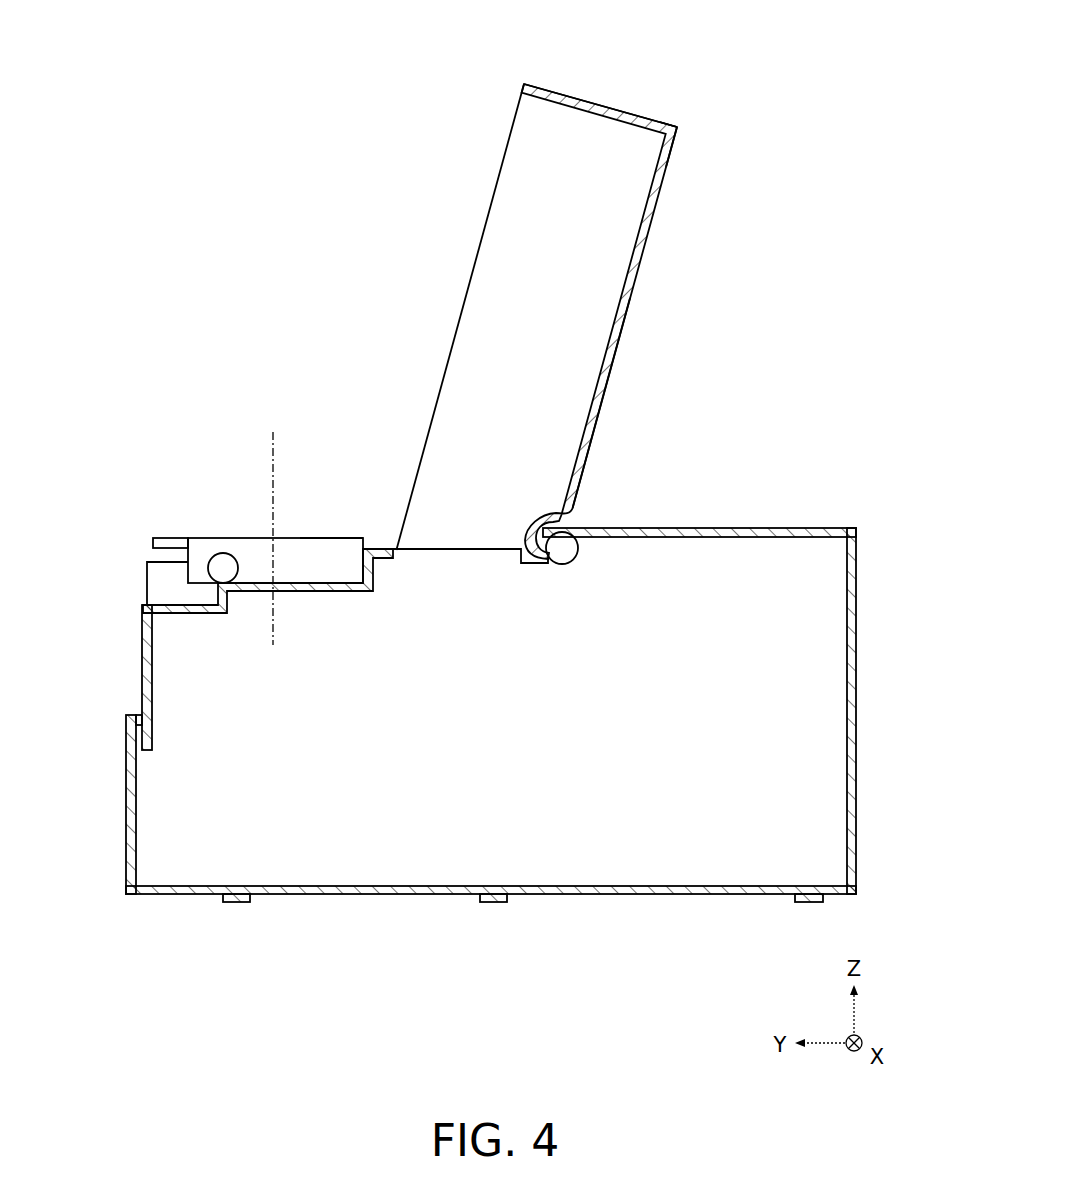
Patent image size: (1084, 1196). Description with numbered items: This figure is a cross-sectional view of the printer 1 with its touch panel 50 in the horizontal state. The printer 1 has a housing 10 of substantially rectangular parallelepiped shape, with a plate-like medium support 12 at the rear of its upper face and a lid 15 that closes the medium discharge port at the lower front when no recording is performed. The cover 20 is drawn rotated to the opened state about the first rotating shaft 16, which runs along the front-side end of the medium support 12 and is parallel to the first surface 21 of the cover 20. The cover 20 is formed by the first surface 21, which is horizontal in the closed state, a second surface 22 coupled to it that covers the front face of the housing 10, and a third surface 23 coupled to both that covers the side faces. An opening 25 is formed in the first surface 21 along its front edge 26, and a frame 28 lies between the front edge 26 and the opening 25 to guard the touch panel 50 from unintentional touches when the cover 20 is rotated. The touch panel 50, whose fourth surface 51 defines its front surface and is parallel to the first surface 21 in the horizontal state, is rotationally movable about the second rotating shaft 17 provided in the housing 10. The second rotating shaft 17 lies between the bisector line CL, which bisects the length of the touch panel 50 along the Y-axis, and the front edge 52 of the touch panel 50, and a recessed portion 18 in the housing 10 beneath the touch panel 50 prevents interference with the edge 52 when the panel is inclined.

The printer 1 is at (838, 86).
The housing 10 is at (866, 795).
The medium support 12 is at (740, 527).
The lid 15 is at (124, 812).
The first rotating shaft 16 is at (566, 563).
The second rotating shaft 17 is at (237, 586).
The recessed portion 18 is at (150, 600).
The cover 20 is at (472, 81).
The first surface 21 is at (598, 437).
The second surface 22 is at (602, 106).
The third surface 23 is at (480, 242).
The opening 25 is at (614, 350).
The front edge 26 is at (681, 121).
The frame 28 is at (676, 156).
The touch panel 50 is at (246, 530).
The fourth surface 51 is at (348, 537).
The front edge 52 is at (188, 537).
The bisector line CL is at (276, 440).